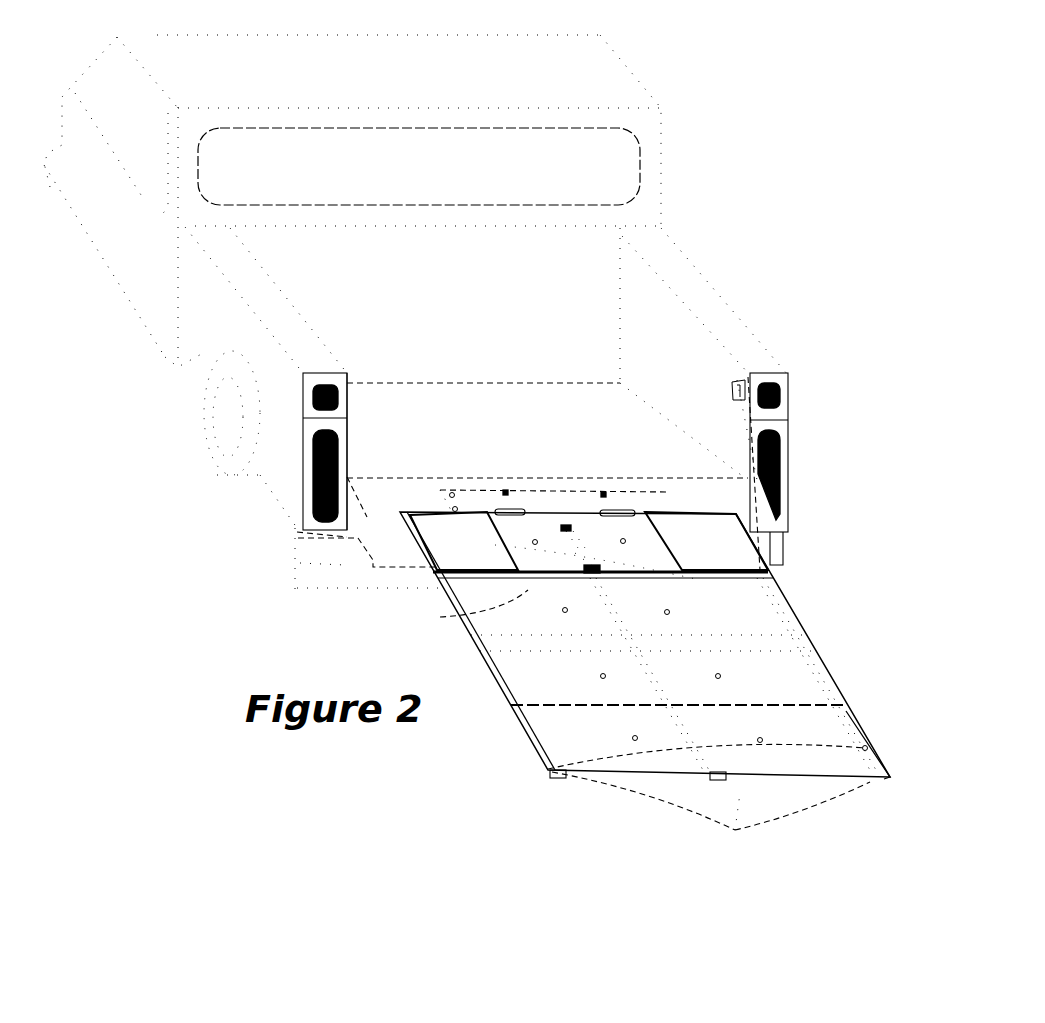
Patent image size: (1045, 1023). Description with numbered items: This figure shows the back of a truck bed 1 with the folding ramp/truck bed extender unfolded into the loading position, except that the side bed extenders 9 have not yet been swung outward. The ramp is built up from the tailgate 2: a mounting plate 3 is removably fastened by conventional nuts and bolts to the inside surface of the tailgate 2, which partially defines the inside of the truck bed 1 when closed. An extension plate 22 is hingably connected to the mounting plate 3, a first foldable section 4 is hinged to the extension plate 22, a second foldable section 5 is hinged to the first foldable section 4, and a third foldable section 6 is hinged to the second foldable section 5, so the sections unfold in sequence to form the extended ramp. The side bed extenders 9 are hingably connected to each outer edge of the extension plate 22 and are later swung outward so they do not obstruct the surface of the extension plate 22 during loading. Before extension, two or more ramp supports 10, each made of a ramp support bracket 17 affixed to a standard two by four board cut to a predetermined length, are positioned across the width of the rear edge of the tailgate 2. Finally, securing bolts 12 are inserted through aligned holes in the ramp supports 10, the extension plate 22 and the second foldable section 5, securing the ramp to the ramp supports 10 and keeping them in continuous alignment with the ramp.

The truck bed 1 is at (416, 302).
The tailgate 2 is at (353, 559).
The mounting plate 3 is at (475, 497).
The first foldable section 4 is at (798, 610).
The second foldable section 5 is at (828, 662).
The third foldable section 6 is at (865, 723).
The side bed extenders 9 is at (663, 571).
The ramp supports 10 is at (711, 819).
The securing bolts 12 is at (548, 770).
The ramp support bracket 17 is at (548, 500).
The extension plate 22 is at (490, 615).